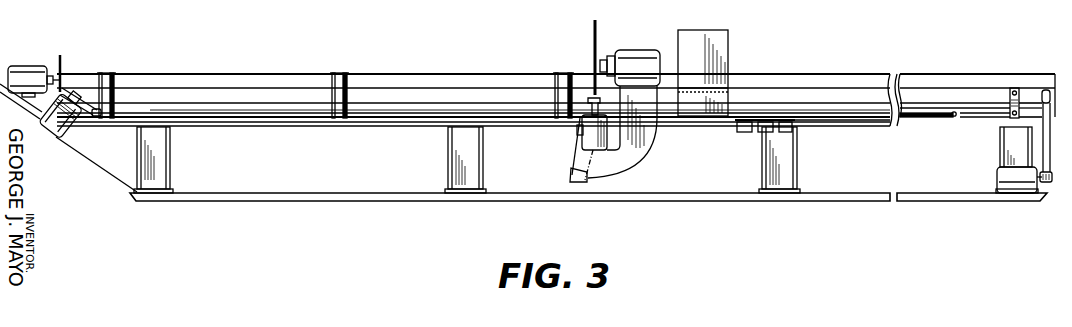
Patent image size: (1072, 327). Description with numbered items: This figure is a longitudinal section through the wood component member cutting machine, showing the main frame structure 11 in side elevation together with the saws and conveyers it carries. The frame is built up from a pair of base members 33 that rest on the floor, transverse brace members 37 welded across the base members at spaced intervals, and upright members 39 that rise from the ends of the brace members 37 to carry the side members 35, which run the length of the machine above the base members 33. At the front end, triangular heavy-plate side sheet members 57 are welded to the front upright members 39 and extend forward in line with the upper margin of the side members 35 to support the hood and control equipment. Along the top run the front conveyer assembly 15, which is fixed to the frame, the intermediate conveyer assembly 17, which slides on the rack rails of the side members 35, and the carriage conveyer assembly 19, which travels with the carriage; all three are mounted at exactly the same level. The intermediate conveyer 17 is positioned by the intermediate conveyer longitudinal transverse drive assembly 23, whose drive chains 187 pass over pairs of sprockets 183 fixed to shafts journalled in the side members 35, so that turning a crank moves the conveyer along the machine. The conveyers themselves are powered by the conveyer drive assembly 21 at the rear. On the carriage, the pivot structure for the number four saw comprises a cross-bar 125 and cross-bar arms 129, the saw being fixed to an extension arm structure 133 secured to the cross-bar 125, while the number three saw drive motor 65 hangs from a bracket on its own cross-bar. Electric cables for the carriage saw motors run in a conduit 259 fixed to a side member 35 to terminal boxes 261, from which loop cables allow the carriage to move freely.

The main frame structure 11 is at (273, 204).
The base members 33 is at (584, 203).
The side members 35 is at (1007, 76).
The intermediate conveyer longitudinal transverse drive assembly 23 is at (941, 117).
The drive chains 187 is at (857, 119).
The upright members 39 is at (171, 158).
The transverse brace members 37 is at (171, 190).
The front conveyer assembly 15 is at (111, 74).
The intermediate conveyer assembly 17 is at (345, 74).
The carriage conveyer assembly 19 is at (568, 75).
The side sheet members 57 is at (118, 178).
The sprockets 183 is at (97, 117).
The conduit 259 is at (283, 127).
The extension arm structure 133 is at (646, 142).
The cross-bar arms 129 is at (584, 149).
The cross-bar 125 is at (571, 180).
The No. 3 saw drive motor 65 is at (595, 148).
The terminal boxes 261 is at (748, 133).
The conveyer drive assembly 21 is at (1045, 140).